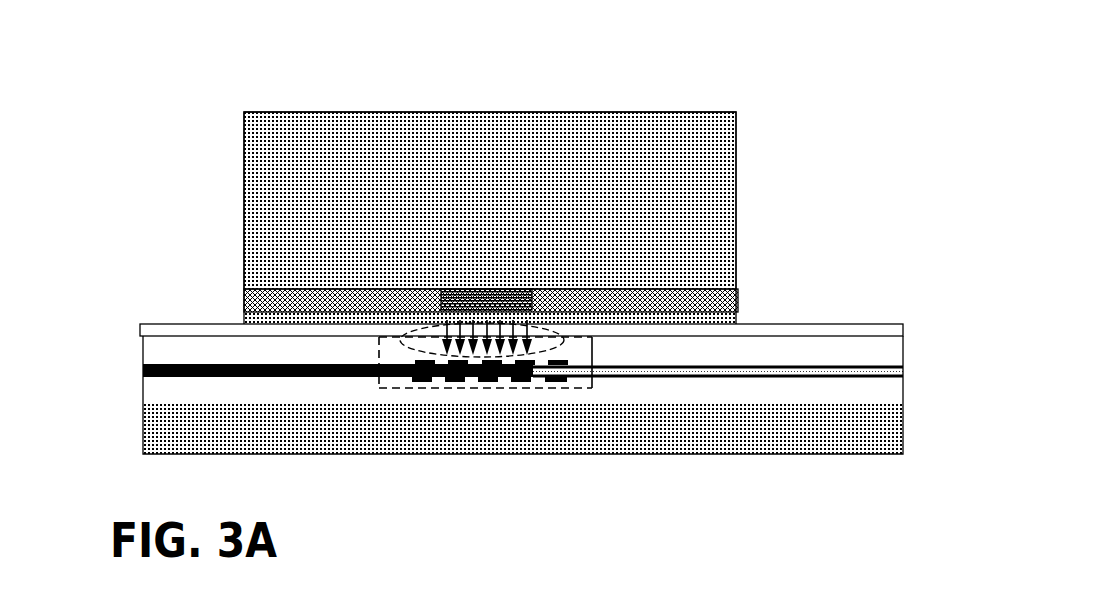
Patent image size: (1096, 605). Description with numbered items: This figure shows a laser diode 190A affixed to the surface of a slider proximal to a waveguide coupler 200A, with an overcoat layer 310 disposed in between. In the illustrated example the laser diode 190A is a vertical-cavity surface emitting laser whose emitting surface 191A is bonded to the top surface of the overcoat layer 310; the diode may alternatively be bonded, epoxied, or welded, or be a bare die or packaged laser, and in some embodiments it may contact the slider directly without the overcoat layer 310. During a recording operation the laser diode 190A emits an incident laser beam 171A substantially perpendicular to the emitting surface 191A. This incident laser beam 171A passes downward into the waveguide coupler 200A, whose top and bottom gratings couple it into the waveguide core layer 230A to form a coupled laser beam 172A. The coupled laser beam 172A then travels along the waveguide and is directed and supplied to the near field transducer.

The laser diode 190A is at (655, 113).
The emitting surface 191A is at (372, 322).
The incident laser beam 171A is at (527, 322).
The waveguide coupler 200A is at (595, 337).
The coupled laser beam 172A is at (760, 367).
The overcoat layer 310 is at (226, 330).
The waveguide core layer 230A is at (187, 475).